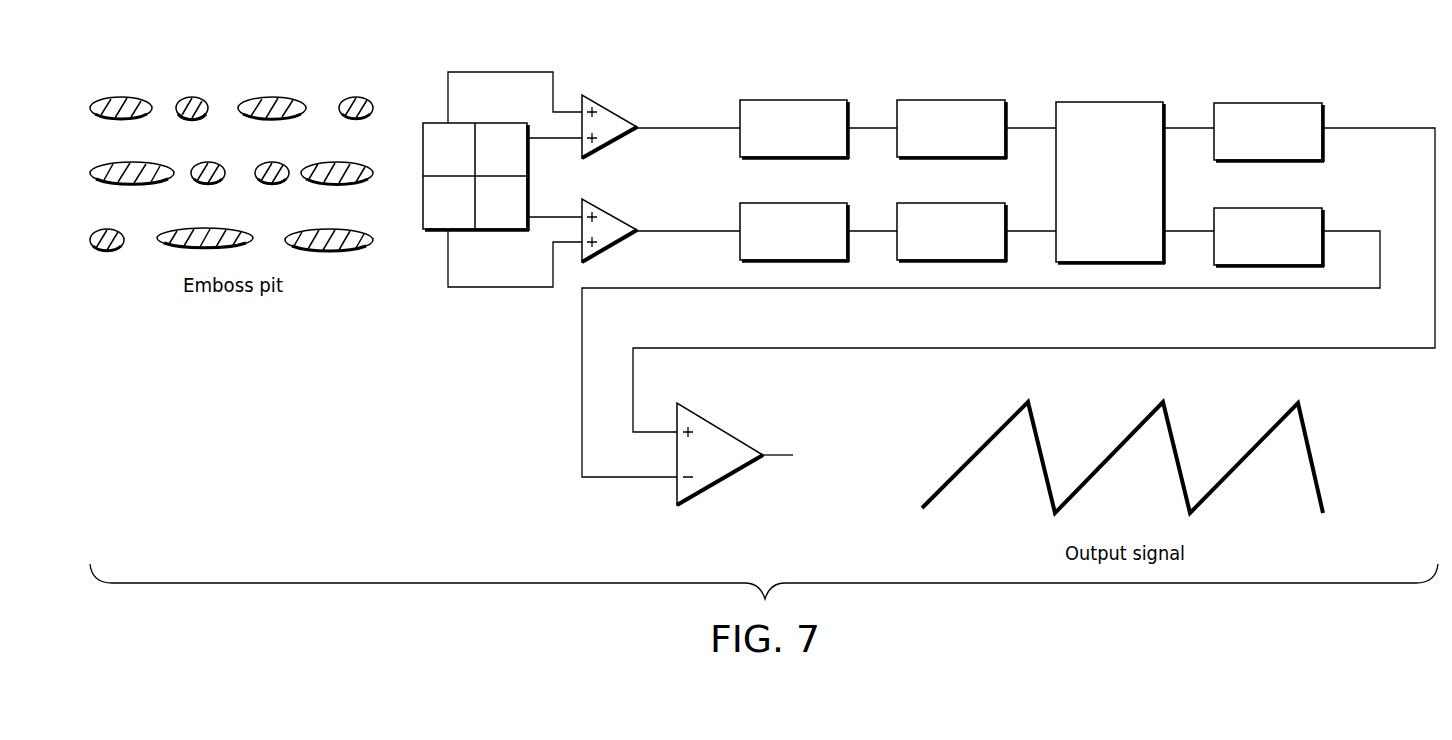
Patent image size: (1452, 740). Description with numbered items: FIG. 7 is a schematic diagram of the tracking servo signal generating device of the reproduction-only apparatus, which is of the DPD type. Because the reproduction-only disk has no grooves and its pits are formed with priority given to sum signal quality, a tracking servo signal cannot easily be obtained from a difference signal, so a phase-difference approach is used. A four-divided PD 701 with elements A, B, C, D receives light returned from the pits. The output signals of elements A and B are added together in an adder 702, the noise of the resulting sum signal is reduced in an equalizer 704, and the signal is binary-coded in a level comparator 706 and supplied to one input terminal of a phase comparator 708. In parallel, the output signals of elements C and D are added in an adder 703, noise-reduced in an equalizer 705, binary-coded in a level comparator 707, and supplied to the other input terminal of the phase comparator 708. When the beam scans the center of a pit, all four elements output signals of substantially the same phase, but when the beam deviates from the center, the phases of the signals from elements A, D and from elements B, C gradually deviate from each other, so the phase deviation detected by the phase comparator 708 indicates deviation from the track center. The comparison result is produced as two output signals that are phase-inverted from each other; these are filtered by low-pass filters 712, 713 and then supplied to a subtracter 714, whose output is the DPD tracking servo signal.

The four-divided PD 701 is at (429, 112).
The adder 702 is at (618, 107).
The adder 703 is at (618, 213).
The equalizer (EQ) 704 is at (793, 100).
The equalizer (EQ) 705 is at (797, 203).
The level comparator 706 is at (952, 100).
The level comparator 707 is at (955, 203).
The phase comparator 708 is at (1108, 102).
The low-pass filter 712 is at (1268, 103).
The low-pass filter 713 is at (1270, 208).
The subtracter 714 is at (733, 423).